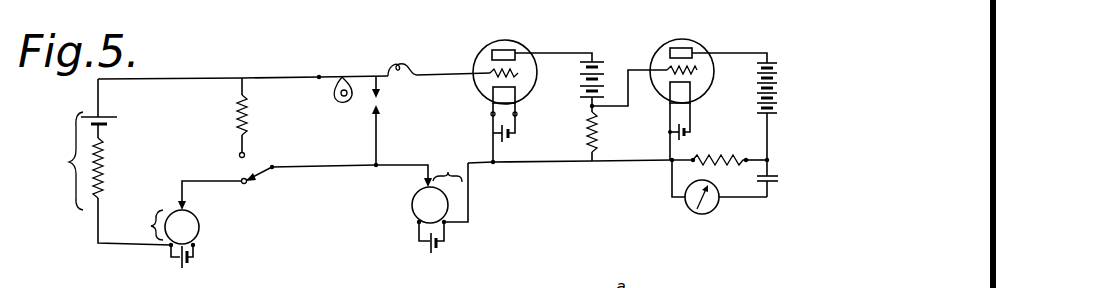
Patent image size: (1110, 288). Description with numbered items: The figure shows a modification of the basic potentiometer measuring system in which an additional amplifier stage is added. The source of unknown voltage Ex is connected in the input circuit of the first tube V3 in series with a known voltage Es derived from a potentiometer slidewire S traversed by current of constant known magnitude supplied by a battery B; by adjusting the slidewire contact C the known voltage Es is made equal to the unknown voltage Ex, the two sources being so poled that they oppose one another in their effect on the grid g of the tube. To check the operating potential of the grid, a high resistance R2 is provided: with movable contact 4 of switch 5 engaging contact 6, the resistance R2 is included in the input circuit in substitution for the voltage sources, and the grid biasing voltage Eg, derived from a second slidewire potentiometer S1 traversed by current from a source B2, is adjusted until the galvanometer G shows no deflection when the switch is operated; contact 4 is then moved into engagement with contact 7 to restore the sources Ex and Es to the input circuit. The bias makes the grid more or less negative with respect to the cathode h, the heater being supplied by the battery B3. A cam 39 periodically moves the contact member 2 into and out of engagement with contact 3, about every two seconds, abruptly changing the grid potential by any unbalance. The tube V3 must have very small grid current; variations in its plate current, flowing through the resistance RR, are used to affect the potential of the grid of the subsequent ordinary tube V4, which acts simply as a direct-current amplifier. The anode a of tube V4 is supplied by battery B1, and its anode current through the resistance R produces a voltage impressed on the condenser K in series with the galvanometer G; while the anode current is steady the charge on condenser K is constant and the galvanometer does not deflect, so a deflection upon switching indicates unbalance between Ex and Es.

The source of unknown voltage Ex is at (76, 162).
The resistance R2 is at (249, 115).
The contact 6 is at (239, 155).
The switch 5 is at (266, 162).
The movable contact 4 is at (262, 172).
The contact 7 is at (243, 185).
The slidewire contact C is at (186, 208).
The known voltage Es is at (146, 220).
The potentiometer slidewire S is at (199, 235).
The battery B is at (191, 262).
The cam 39 is at (351, 104).
The contact 3 is at (381, 85).
The contact member 2 is at (381, 113).
The grid biasing voltage Eg is at (437, 187).
The second slidewire potentiometer S1 is at (442, 190).
The source B2 is at (439, 250).
The tube V3 is at (520, 46).
The anode a is at (492, 55).
The grid g is at (477, 86).
The cathode h is at (516, 93).
The battery B3 is at (510, 137).
The resistance RR is at (579, 107).
The tube V4 is at (704, 46).
The battery B1 is at (757, 100).
The resistance R is at (719, 150).
The condenser K is at (772, 172).
The galvanometer G is at (712, 210).